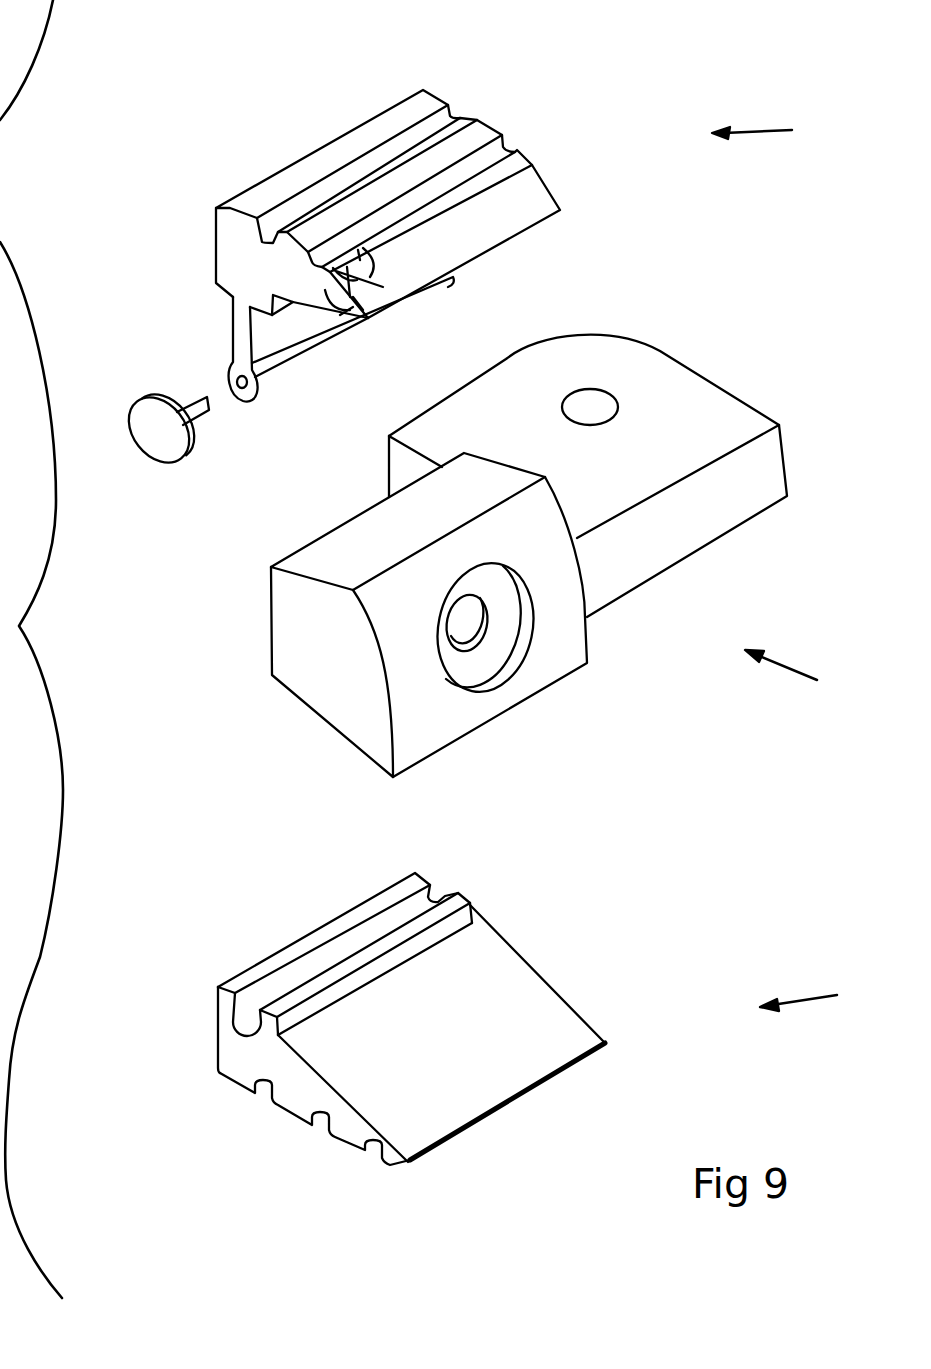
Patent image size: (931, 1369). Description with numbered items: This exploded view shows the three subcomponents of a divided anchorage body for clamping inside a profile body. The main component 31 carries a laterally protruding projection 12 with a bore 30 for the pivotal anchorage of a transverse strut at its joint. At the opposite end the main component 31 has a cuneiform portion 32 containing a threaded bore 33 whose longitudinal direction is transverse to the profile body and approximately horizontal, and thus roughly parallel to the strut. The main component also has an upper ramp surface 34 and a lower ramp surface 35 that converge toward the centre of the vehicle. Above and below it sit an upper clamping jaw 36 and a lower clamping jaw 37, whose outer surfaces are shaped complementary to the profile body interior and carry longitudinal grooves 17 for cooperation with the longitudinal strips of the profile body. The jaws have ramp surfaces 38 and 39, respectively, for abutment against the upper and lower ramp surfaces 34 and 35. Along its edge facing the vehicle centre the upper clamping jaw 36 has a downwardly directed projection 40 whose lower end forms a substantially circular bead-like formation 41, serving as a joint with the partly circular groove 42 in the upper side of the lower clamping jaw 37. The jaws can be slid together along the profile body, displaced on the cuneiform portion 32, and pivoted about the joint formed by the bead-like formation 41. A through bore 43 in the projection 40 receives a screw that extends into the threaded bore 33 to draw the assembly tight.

The projection 12 is at (670, 403).
The longitudinal grooves 17 is at (440, 123).
The bore 30 is at (588, 403).
The main component 31 is at (781, 647).
The cuneiform portion 32 is at (427, 717).
The threaded bore 33 is at (463, 620).
The upper ramp surface 34 is at (343, 550).
The lower ramp surface 35 is at (333, 730).
The upper clamping jaw 36 is at (752, 112).
The lower clamping jaw 37 is at (798, 978).
The ramp surface 38 is at (527, 230).
The ramp surface 39 is at (502, 987).
The downwardly directed projection 40 is at (238, 329).
The bead-like formation 41 is at (292, 365).
The partly circular groove 42 is at (410, 908).
The through bore 43 is at (383, 287).